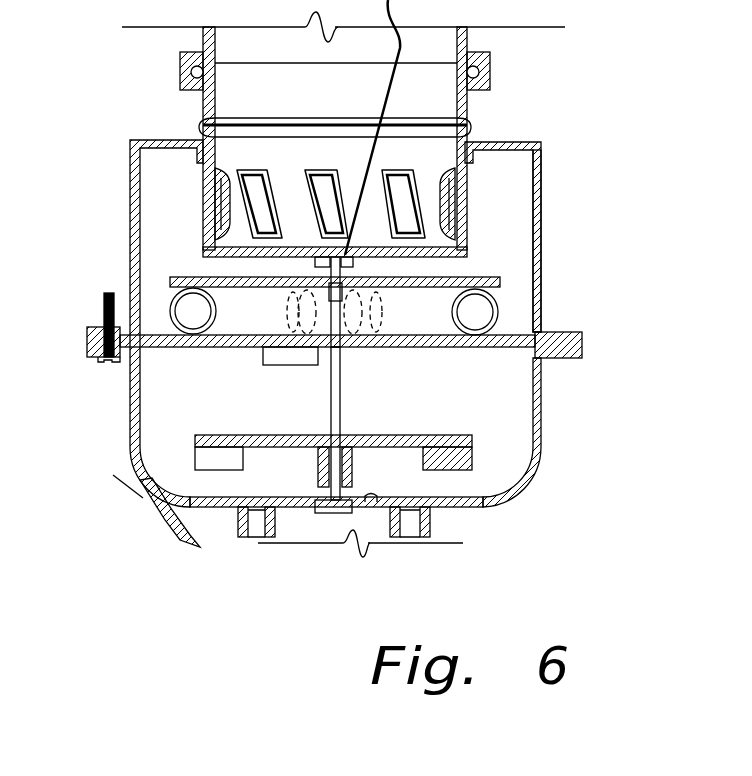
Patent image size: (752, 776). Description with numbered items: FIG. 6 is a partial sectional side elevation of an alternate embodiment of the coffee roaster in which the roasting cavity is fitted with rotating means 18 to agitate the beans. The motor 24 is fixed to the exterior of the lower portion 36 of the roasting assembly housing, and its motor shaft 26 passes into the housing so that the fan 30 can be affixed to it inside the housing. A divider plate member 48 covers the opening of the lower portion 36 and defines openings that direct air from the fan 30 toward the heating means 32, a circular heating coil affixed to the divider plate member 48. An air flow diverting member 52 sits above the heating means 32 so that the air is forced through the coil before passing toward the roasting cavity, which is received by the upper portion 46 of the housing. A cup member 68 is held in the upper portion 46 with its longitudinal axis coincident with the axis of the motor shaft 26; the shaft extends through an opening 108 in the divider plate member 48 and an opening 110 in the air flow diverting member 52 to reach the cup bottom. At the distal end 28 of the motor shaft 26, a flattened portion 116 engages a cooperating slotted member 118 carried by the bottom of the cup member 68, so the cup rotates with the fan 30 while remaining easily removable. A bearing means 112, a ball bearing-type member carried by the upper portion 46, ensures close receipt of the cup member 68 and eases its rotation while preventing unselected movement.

The bearing means 112 is at (192, 72).
The cup member 68 is at (463, 200).
The slotted member 118 is at (327, 262).
The flattened portion 116 is at (330, 264).
The distal end 28 is at (341, 270).
The air flow diverting member 52 is at (492, 280).
The upper portion 46 is at (542, 266).
The opening 110 is at (290, 307).
The heating means 32 is at (500, 305).
The rotating means 18 is at (390, 315).
The divider plate member 48 is at (517, 348).
The motor shaft 26 is at (327, 380).
The opening 108 is at (340, 347).
The lower portion 36 is at (542, 447).
The motor 24 is at (310, 533).
The fan 30 is at (450, 470).